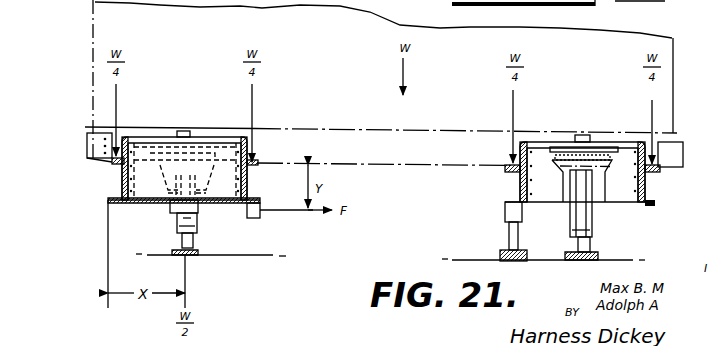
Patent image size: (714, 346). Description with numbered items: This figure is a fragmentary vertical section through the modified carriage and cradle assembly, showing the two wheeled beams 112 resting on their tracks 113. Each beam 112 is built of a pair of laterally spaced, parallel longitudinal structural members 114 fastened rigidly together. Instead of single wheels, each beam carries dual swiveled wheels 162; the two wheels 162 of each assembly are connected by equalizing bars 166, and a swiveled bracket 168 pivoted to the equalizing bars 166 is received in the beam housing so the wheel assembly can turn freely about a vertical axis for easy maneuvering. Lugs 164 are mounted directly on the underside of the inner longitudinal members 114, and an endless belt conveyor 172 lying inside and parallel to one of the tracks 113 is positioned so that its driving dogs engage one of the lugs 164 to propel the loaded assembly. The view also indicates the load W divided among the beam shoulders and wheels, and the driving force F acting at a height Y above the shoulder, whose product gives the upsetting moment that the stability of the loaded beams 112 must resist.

The wheeled beam 112 is at (118, 181).
The track 113 is at (196, 251).
The longitudinal structural member 114 is at (254, 168).
The dual swiveled wheel 162 is at (177, 225).
The lug 164 is at (256, 218).
The equalizing bar 166 is at (593, 218).
The swiveled bracket 168 is at (555, 178).
The endless belt conveyor 172 is at (500, 255).